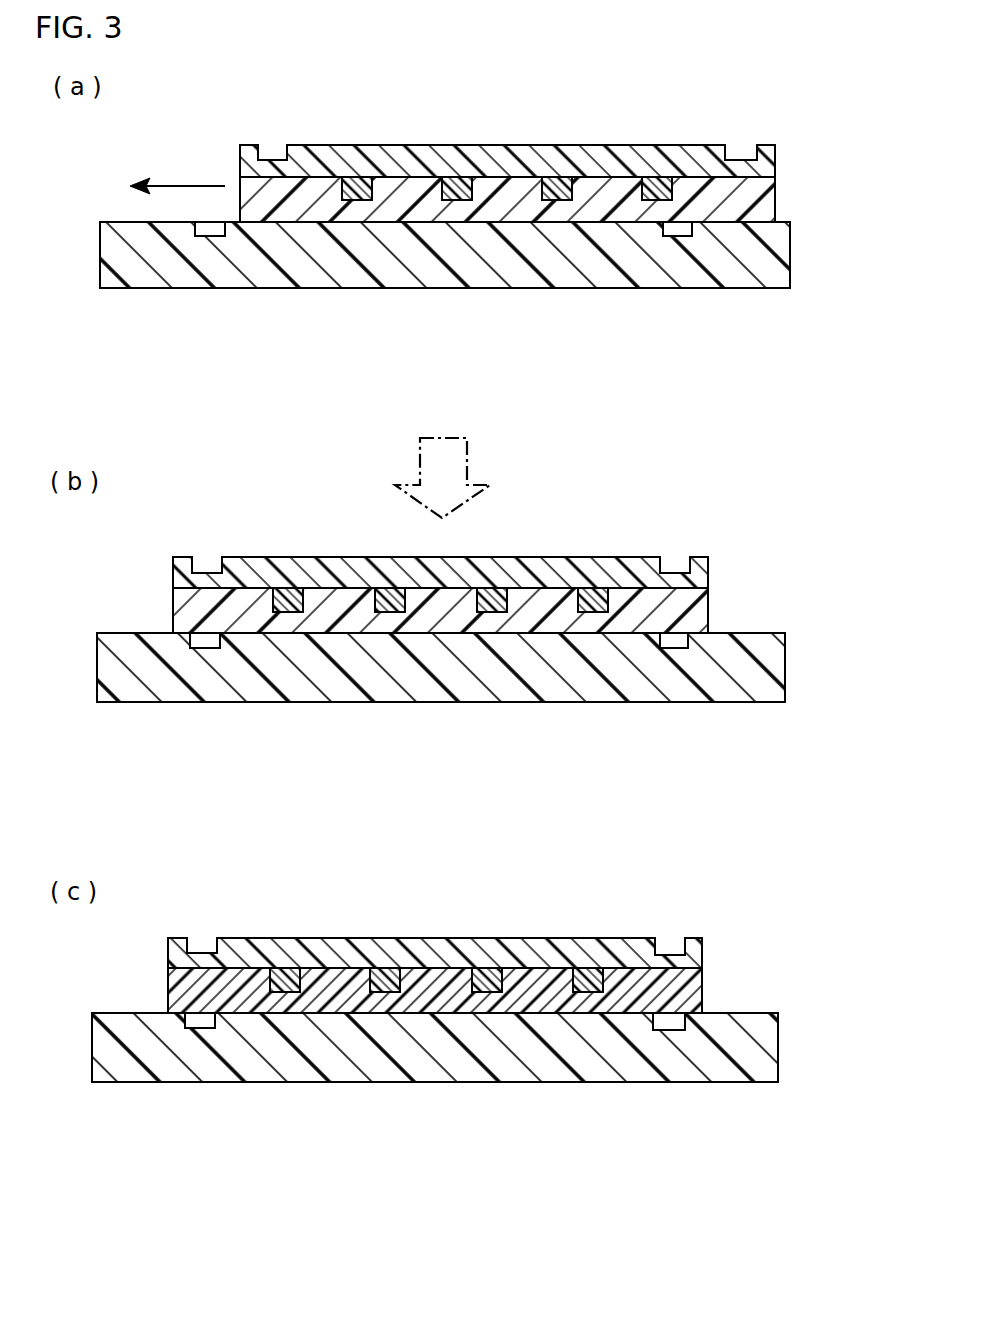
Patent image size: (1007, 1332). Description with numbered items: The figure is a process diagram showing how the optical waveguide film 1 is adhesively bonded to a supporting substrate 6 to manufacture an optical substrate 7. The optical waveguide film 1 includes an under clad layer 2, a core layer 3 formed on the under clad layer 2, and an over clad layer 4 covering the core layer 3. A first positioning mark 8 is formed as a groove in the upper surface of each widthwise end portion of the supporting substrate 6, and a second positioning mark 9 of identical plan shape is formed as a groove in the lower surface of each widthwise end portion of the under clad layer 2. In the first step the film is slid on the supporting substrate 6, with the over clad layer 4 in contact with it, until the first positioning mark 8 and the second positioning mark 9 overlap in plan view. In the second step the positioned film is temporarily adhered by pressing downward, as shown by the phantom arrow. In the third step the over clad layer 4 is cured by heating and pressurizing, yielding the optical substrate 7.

The optical waveguide film 1 is at (238, 182).
The under clad layer 2 is at (778, 154).
The core layer 3 is at (352, 177).
The over clad layer 4 is at (778, 197).
The supporting substrate 6 is at (793, 258).
The optical substrate 7 is at (395, 1157).
The first positioning mark 8 is at (206, 236).
The second positioning mark 9 is at (272, 160).